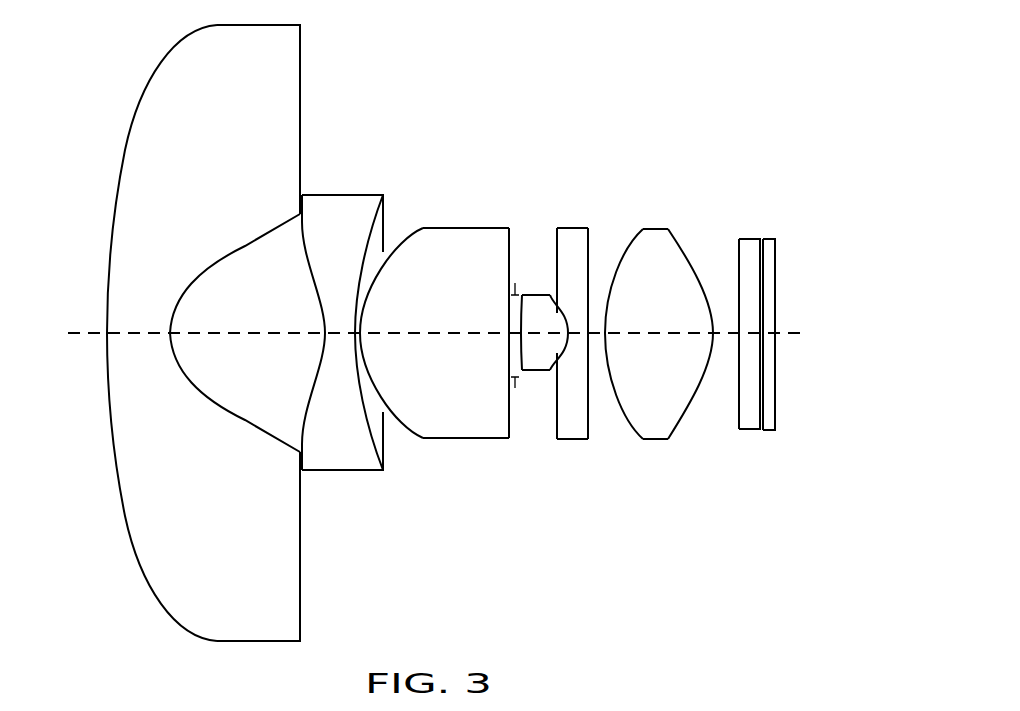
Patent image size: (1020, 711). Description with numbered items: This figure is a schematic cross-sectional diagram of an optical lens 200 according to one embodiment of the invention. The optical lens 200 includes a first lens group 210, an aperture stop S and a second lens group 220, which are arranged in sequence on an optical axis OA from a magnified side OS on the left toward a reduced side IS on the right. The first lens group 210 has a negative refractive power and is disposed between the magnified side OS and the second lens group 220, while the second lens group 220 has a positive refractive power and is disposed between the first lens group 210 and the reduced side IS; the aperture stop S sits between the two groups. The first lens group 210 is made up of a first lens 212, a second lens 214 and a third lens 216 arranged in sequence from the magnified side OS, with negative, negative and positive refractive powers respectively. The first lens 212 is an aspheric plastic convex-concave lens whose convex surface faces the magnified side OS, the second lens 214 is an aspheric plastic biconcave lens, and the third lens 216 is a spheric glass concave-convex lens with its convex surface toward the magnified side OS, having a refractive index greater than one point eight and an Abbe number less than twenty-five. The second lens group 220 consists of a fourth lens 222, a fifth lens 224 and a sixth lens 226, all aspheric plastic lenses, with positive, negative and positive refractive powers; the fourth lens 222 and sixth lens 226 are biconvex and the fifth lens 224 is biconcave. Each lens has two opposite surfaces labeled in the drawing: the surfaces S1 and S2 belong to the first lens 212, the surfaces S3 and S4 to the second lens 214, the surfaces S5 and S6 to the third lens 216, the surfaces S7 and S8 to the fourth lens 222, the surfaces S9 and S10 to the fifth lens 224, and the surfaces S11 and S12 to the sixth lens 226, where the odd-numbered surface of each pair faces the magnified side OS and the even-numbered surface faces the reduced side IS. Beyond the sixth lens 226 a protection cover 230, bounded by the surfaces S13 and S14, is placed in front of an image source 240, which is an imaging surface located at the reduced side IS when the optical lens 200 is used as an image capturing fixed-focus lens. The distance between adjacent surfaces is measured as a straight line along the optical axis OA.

The optical lens 200 is at (434, 334).
The first lens group 210 is at (313, 327).
The first lens 212 is at (258, 327).
The second lens 214 is at (378, 365).
The third lens 216 is at (436, 356).
The second lens group 220 is at (592, 386).
The fourth lens 222 is at (523, 380).
The fifth lens 224 is at (589, 382).
The sixth lens 226 is at (659, 365).
The protection cover 230 is at (738, 341).
The image source 240 is at (782, 329).
The aperture stop S is at (515, 388).
The surface S1 is at (143, 90).
The surface S2 is at (254, 244).
The surface S3 is at (321, 306).
The surface S4 is at (372, 284).
The surface S5 is at (357, 324).
The surface S6 is at (511, 237).
The surface S7 is at (520, 320).
The surface S8 is at (550, 296).
The surface S9 is at (568, 331).
The surface S10 is at (588, 298).
The surface S11 is at (636, 237).
The surface S12 is at (681, 249).
The surface S13 is at (738, 252).
The surface S14 is at (762, 247).
The magnified side OS is at (50, 333).
The reduced side IS is at (818, 333).
The optical axis OA is at (80, 336).